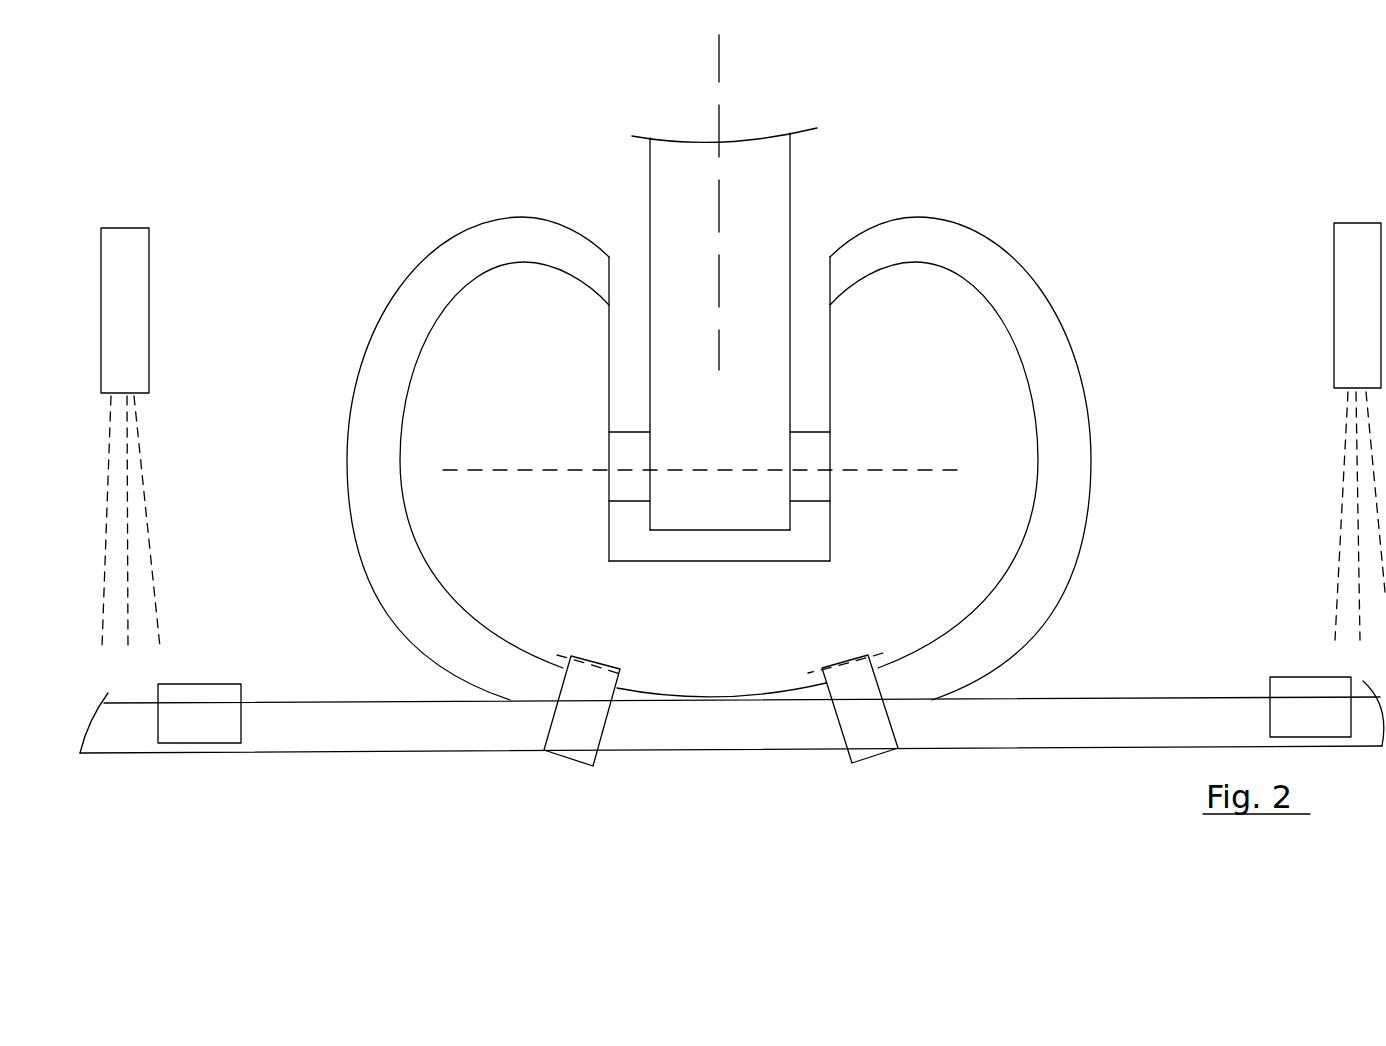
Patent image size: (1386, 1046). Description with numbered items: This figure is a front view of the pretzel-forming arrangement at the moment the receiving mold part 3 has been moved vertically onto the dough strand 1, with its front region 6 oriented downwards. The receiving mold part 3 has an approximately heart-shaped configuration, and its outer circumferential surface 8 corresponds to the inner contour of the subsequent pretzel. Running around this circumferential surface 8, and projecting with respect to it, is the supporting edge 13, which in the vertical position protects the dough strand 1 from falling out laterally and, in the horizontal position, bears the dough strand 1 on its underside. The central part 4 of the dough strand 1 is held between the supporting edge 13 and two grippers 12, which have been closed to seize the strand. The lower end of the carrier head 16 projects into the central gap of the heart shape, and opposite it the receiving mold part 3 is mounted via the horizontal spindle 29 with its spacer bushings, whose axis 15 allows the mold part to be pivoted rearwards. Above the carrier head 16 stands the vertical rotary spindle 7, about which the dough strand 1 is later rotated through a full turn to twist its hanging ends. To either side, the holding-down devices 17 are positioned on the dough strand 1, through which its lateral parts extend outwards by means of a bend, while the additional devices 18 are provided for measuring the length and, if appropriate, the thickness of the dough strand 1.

The dough strand 1 is at (348, 708).
The receiving mold part 3 is at (580, 508).
The central part 4 is at (615, 689).
The front region 6 is at (727, 687).
The vertical rotary spindle 7 is at (720, 63).
The outer circumferential surface 8 is at (1020, 551).
The gripper 12 is at (568, 743).
The supporting edge 13 is at (477, 243).
The axis 15 is at (914, 468).
The carrier head 16 is at (672, 172).
The holding-down device 17 is at (206, 688).
The additional devices 18 is at (140, 344).
The horizontal spindle 29 is at (628, 439).